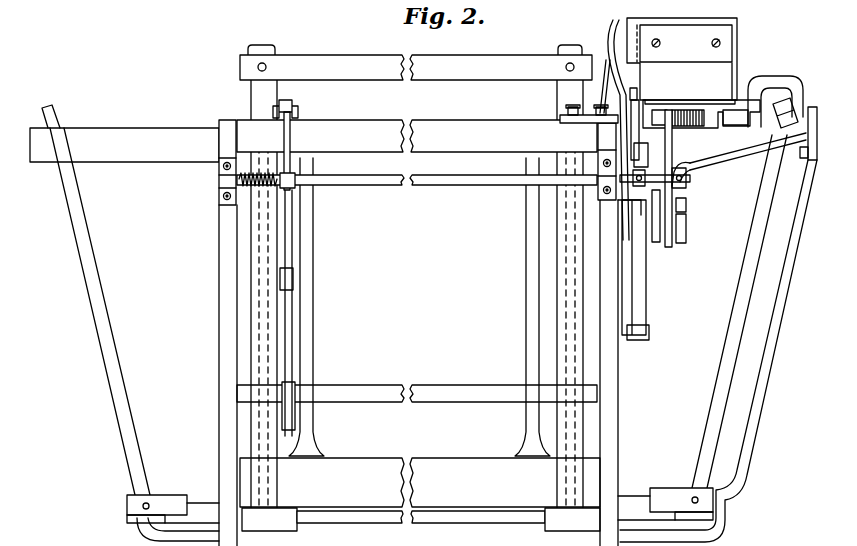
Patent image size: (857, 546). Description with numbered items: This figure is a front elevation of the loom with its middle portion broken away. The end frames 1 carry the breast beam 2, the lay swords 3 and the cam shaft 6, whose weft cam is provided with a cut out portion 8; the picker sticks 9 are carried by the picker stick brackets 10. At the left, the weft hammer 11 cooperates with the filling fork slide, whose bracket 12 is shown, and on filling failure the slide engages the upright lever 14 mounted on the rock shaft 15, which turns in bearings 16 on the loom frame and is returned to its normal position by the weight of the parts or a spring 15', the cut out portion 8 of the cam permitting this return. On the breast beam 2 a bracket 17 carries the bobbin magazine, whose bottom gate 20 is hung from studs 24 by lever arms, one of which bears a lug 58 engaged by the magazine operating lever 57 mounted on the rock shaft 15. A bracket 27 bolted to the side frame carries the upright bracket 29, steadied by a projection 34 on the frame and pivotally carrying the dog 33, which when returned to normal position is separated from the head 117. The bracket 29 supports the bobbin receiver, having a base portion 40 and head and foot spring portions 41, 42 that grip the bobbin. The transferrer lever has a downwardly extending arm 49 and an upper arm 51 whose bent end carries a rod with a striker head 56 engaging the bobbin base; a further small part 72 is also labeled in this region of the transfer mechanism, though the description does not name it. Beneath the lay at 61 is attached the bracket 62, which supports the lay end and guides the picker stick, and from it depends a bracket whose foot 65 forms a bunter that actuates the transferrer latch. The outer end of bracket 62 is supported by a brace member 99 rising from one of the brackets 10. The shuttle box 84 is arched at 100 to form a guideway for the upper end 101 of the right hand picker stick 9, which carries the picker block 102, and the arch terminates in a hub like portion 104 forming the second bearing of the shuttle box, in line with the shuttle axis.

The end frame 1 is at (221, 255).
The breast beam 2 is at (455, 122).
The lay sword 3 is at (272, 243).
The cam shaft 6 is at (355, 394).
The cut out portion 8 is at (288, 418).
The picker stick 9 is at (78, 250).
The picker stick bracket 10 is at (170, 497).
The weft hammer 11 is at (293, 338).
The filling fork slide bracket 12 is at (293, 106).
The upright lever 14 is at (292, 136).
The rock shaft 15 is at (417, 194).
The spring 15' is at (232, 199).
The bearing 16 is at (218, 182).
The bracket 17 is at (604, 62).
The gate 20 is at (690, 108).
The stud 24 is at (733, 50).
The bracket 27 is at (632, 340).
The upright bracket 29 is at (647, 285).
The dog 33 is at (648, 150).
The projection 34 is at (622, 212).
The base portion 40 is at (702, 127).
The head spring portion 41 is at (724, 117).
The foot spring portion 42 is at (645, 125).
The downwardly extending arm 49 is at (672, 243).
The upper arm 51 is at (686, 188).
The striker head 56 is at (658, 110).
The magazine operating lever 57 is at (637, 93).
The lug 58 is at (621, 122).
The under side of the lay 61 is at (162, 150).
The bracket 62 is at (712, 165).
The foot 65 is at (688, 224).
The collar 72 is at (688, 208).
The shuttle box 84 is at (752, 131).
The brace member 99 is at (765, 355).
The arch 100 is at (768, 76).
The upper end of picker stick 101 is at (782, 105).
The picker block 102 is at (742, 155).
The hub-like portion 104 is at (815, 105).
The head 117 is at (633, 137).